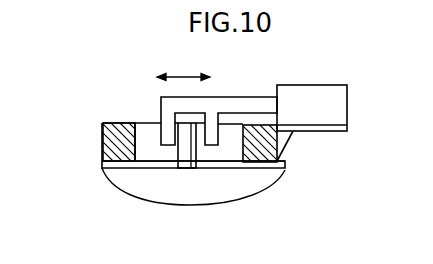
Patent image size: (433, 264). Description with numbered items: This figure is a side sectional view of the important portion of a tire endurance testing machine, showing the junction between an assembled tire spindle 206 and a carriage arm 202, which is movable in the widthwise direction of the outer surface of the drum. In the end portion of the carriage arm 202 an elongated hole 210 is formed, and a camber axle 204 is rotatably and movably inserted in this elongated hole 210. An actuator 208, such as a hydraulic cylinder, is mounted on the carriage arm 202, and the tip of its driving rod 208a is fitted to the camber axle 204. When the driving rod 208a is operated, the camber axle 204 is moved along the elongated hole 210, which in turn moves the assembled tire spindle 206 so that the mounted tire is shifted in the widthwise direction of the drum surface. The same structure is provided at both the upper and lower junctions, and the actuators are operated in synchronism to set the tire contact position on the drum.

The carriage arm 202 is at (103, 142).
The camber axle 204 is at (185, 133).
The assembled tire spindle 206 is at (287, 182).
The actuator 208 is at (327, 95).
The driving rod 208a is at (252, 97).
The elongated hole 210 is at (243, 141).